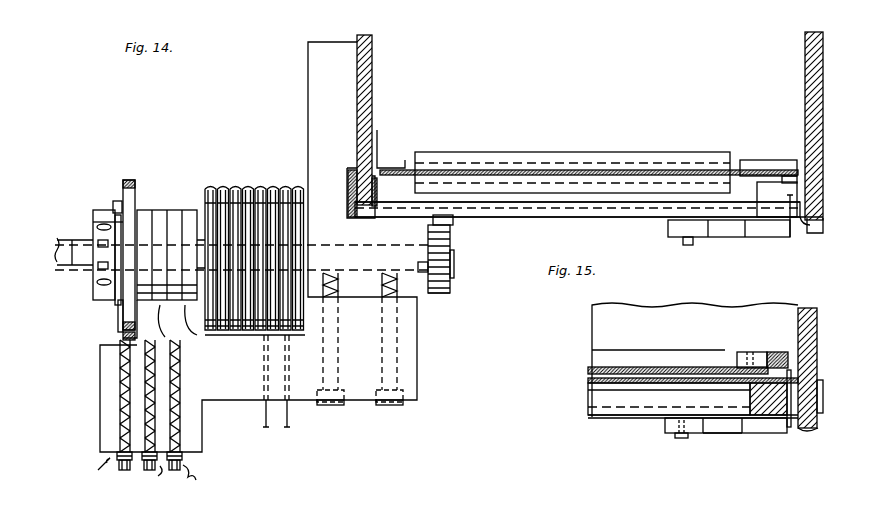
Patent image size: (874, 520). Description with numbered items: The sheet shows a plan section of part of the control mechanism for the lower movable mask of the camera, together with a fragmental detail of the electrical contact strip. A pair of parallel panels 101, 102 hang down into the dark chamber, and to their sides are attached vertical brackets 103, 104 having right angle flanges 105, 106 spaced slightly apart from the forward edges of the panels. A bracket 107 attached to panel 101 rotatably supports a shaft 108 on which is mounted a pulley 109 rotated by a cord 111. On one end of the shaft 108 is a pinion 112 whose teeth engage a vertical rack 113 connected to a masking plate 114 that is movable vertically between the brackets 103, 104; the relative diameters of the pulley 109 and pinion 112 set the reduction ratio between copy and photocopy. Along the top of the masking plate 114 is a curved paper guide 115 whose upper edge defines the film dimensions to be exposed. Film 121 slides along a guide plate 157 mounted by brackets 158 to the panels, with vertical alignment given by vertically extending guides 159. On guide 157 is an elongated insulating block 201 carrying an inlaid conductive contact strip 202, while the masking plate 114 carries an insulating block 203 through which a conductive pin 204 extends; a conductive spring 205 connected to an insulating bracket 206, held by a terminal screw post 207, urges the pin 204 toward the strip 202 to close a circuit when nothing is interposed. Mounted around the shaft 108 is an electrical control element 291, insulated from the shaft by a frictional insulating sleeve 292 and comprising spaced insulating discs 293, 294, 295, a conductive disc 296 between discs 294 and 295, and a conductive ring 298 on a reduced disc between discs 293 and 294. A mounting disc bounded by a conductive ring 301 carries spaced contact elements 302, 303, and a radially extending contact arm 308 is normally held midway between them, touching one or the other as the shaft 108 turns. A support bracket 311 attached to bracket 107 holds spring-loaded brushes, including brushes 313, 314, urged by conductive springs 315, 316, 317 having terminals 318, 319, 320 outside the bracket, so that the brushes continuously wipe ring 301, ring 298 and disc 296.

In FIG. 14, the panel 101 is at (372, 60).
In FIG. 14, the panel 102 is at (805, 49).
In FIG. 15, the panel 102 is at (800, 306).
In FIG. 14, the vertical bracket 103 is at (348, 175).
In FIG. 14, the vertical bracket 104 is at (815, 233).
In FIG. 15, the vertical bracket 104 is at (820, 413).
In FIG. 14, the right angle flange 105 is at (358, 219).
In FIG. 14, the right angle flange 106 is at (806, 234).
In FIG. 15, the right angle flange 106 is at (808, 430).
In FIG. 14, the bracket 107 is at (308, 73).
In FIG. 14, the shaft 108 is at (455, 262).
In FIG. 14, the pulley 109 is at (226, 187).
In FIG. 14, the cord 111 is at (284, 421).
In FIG. 14, the pinion 112 is at (443, 294).
In FIG. 14, the vertical rack 113 is at (446, 225).
In FIG. 14, the masking plate 114 is at (527, 219).
In FIG. 15, the masking plate 114 is at (592, 417).
In FIG. 14, the curved paper guide 115 is at (620, 209).
In FIG. 15, the curved paper guide 115 is at (598, 390).
In FIG. 14, the film 121 is at (570, 168).
In FIG. 15, the film 121 is at (700, 369).
In FIG. 14, the guide plate 157 is at (406, 168).
In FIG. 15, the guide plate 157 is at (600, 375).
In FIG. 14, the bracket 158 is at (380, 134).
In FIG. 14, the vertically extending guide 159 is at (380, 206).
In FIG. 14, the elongated block 201 is at (741, 159).
In FIG. 15, the elongated block 201 is at (753, 352).
In FIG. 14, the contact strip 202 is at (788, 175).
In FIG. 15, the contact strip 202 is at (790, 347).
In FIG. 14, the block 203 is at (768, 238).
In FIG. 15, the block 203 is at (768, 399).
In FIG. 14, the pin 204 is at (791, 240).
In FIG. 15, the pin 204 is at (792, 428).
In FIG. 15, the spring 205 is at (728, 433).
In FIG. 15, the insulating bracket 206 is at (665, 419).
In FIG. 15, the terminal screw post 207 is at (682, 440).
In FIG. 14, the electrical control element 291 is at (174, 182).
In FIG. 14, the insulating sleeve 292 is at (96, 290).
In FIG. 14, the insulating disc 293 is at (150, 210).
In FIG. 14, the insulating disc 294 is at (170, 344).
In FIG. 14, the insulating disc 295 is at (184, 210).
In FIG. 14, the electrically conductive disc 296 is at (187, 190).
In FIG. 14, the electrically conductive ring 298 is at (137, 338).
In FIG. 14, the electrically conductive ring 301 is at (130, 180).
In FIG. 14, the contact element 302 is at (113, 204).
In FIG. 14, the contacting element 303 is at (118, 307).
In FIG. 14, the contact arm 308 is at (95, 234).
In FIG. 14, the support bracket 311 is at (372, 403).
In FIG. 14, the electric brush 313 is at (123, 337).
In FIG. 14, the electric brush 314 is at (197, 336).
In FIG. 14, the spring 315 is at (118, 388).
In FIG. 14, the spring 316 is at (143, 398).
In FIG. 14, the spring 317 is at (181, 398).
In FIG. 14, the terminal 318 is at (125, 470).
In FIG. 14, the terminal 319 is at (156, 470).
In FIG. 14, the terminal 320 is at (182, 470).